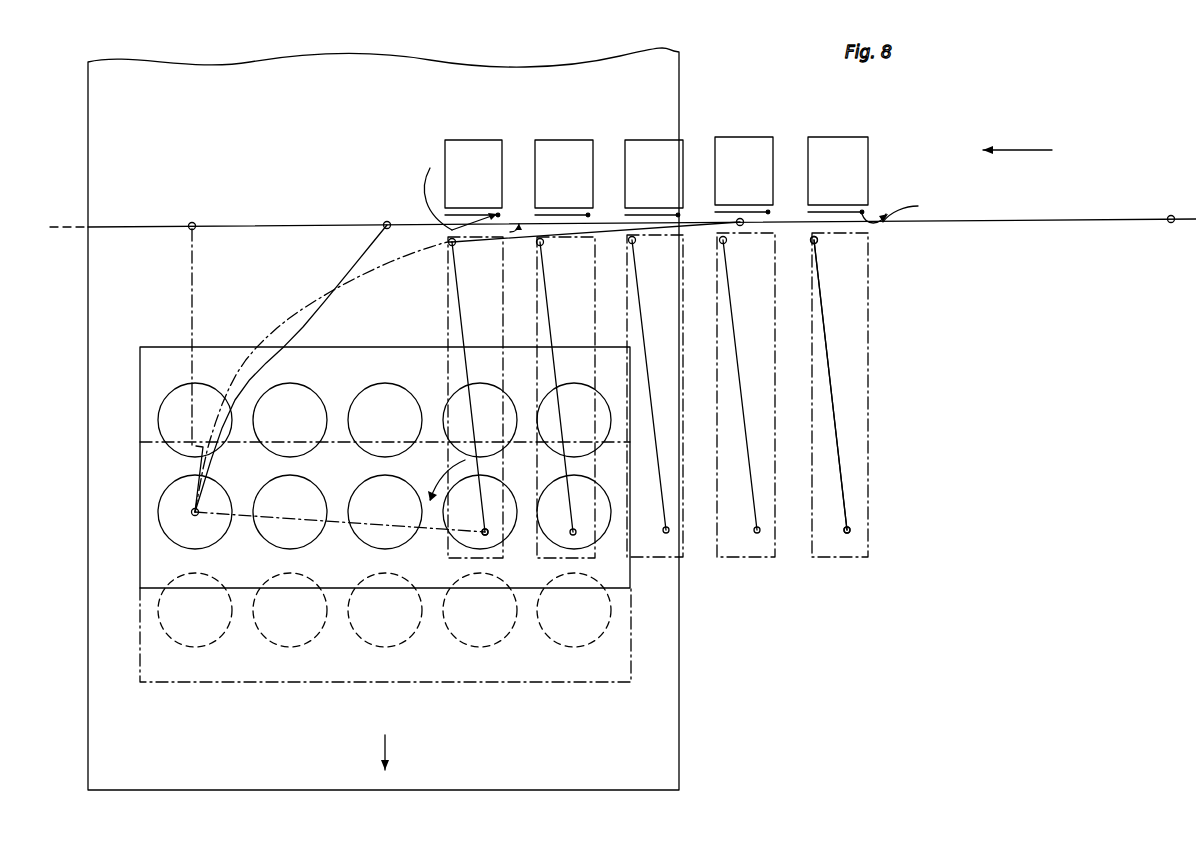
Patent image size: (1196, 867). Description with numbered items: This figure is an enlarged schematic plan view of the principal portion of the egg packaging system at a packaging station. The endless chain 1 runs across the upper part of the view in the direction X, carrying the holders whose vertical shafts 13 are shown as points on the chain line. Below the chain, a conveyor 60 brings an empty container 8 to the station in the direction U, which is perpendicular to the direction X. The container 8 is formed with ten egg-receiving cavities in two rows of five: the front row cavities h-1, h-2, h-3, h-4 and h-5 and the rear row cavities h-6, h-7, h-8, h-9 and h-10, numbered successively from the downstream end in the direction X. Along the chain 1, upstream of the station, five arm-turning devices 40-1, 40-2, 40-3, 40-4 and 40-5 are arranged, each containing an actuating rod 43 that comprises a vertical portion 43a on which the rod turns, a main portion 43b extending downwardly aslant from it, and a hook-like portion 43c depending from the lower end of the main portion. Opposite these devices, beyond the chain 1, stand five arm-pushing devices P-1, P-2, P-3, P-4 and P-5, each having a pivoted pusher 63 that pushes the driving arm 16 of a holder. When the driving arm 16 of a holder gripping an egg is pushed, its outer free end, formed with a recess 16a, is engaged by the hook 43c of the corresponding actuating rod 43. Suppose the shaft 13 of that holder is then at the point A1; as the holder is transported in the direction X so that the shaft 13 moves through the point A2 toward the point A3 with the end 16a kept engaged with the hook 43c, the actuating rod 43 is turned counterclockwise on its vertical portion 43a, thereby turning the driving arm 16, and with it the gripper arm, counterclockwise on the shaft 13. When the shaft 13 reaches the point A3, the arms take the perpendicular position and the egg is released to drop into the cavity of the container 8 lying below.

The endless chain 1 is at (284, 225).
The container 8 is at (88, 508).
The shaft 13 is at (1168, 215).
The driving arm 16 is at (195, 297).
The recess 16a is at (916, 208).
The arm-turning device 40-1 is at (484, 282).
The arm-turning device 40-2 is at (570, 280).
The arm-turning device 40-3 is at (660, 560).
The arm-turning device 40-4 is at (752, 558).
The arm-turning device 40-5 is at (840, 558).
The actuating rod 43 is at (337, 508).
The vertical portion 43a is at (850, 530).
The main portion 43b is at (833, 385).
The hook-like portion 43c is at (816, 241).
The conveyor 60 is at (100, 712).
The pusher 63 is at (896, 196).
The point A1 is at (743, 224).
The point A2 is at (388, 221).
The point A3 is at (194, 222).
The arm-pushing device P-1 is at (468, 138).
The arm-pushing device P-2 is at (558, 138).
The arm-pushing device P-3 is at (644, 138).
The arm-pushing device P-4 is at (738, 136).
The arm-pushing device P-5 is at (834, 136).
The cavity h-1 is at (178, 547).
The cavity h-2 is at (268, 546).
The cavity h-3 is at (405, 545).
The cavity h-4 is at (510, 540).
The cavity h-5 is at (603, 543).
The cavity h-6 is at (160, 405).
The cavity h-7 is at (302, 385).
The cavity h-8 is at (385, 384).
The cavity h-9 is at (479, 383).
The cavity h-10 is at (573, 383).
The direction X is at (1020, 148).
The direction U is at (392, 748).